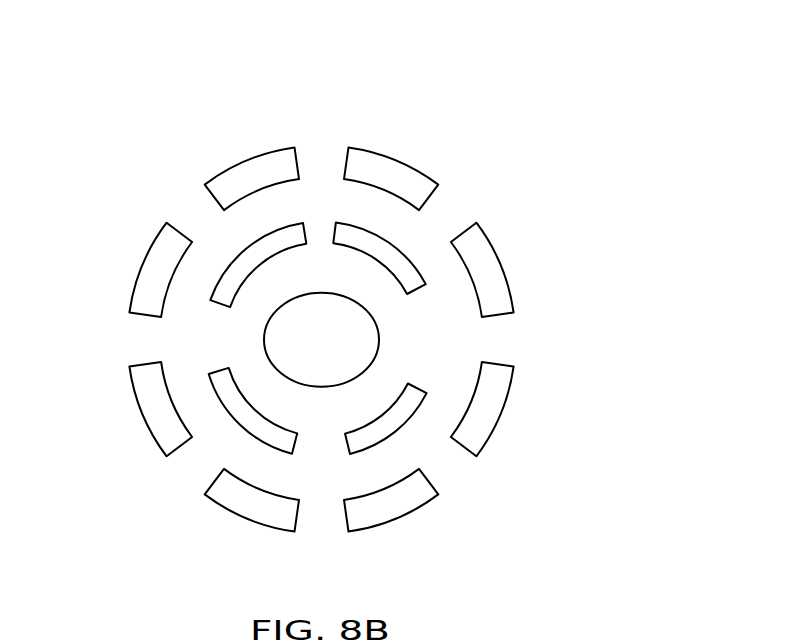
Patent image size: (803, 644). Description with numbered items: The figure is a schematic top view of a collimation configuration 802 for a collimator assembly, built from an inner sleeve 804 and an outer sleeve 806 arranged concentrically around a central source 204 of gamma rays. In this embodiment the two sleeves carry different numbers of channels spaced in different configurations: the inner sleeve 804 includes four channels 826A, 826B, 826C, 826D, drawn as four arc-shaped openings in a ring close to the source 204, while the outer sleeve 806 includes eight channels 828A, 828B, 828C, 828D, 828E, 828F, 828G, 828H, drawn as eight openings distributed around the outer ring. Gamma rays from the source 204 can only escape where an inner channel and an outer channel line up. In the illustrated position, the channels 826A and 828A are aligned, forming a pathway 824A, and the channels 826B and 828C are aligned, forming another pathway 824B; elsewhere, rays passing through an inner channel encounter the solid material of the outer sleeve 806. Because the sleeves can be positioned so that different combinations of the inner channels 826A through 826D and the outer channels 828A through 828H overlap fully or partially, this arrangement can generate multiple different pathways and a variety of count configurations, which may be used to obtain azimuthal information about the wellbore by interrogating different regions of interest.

The source 204 is at (361, 353).
The collimation configuration 802 is at (517, 148).
The inner sleeve 804 is at (373, 240).
The outer sleeve 806 is at (482, 255).
The pathway 824A is at (342, 133).
The pathway 824B is at (524, 356).
The channel 826A is at (318, 232).
The channel 826B is at (415, 332).
The channel 826C is at (323, 446).
The channel 826D is at (215, 341).
The channel 828A is at (320, 160).
The channel 828B is at (448, 215).
The channel 828C is at (503, 337).
The channel 828D is at (453, 468).
The channel 828E is at (317, 521).
The channel 828F is at (190, 468).
The channel 828G is at (137, 337).
The channel 828H is at (193, 213).